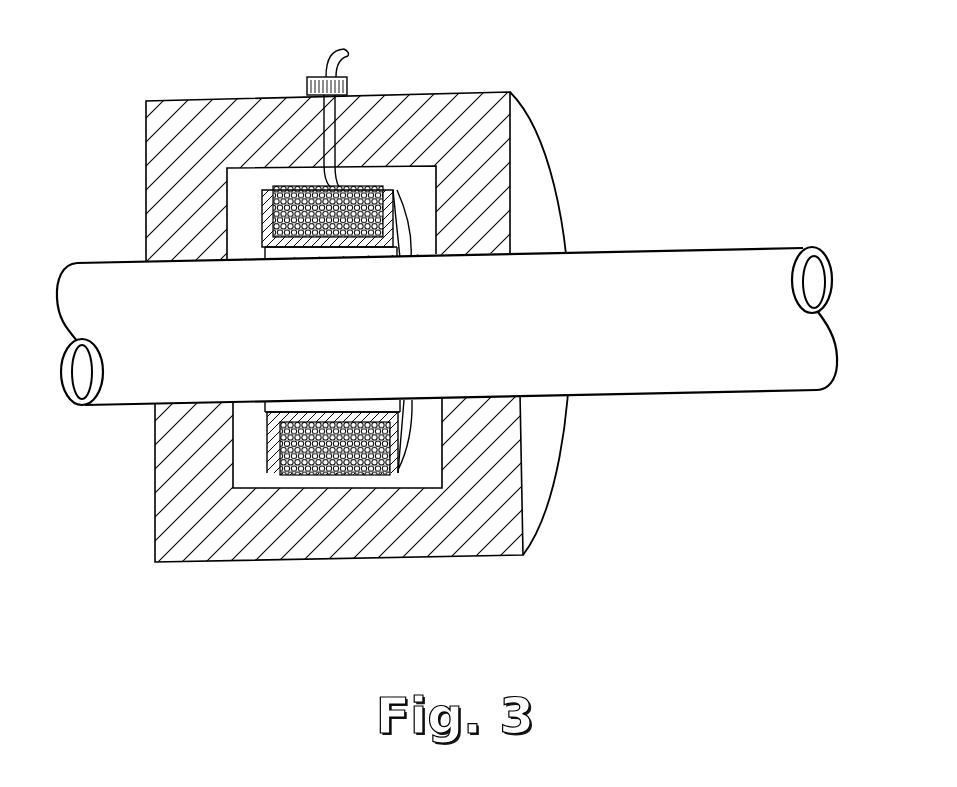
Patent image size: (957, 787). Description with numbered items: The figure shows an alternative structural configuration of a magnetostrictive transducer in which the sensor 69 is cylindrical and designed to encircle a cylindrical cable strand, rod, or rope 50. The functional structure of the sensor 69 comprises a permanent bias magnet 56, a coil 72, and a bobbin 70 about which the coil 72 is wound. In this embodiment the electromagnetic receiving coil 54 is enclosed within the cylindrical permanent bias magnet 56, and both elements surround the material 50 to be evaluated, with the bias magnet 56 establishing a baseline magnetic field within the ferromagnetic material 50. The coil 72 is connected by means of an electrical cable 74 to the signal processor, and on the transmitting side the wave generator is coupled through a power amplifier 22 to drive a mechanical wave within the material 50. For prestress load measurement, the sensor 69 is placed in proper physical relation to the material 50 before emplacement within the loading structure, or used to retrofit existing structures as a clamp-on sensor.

The power amplifier 22 is at (355, 50).
The ferromagnetic material 50 is at (604, 339).
The receiving coil 54 is at (364, 250).
The permanent bias magnet 56 is at (146, 175).
The magnetostrictive sensor 69 is at (556, 160).
The bobbin 70 is at (306, 412).
The coil 72 is at (357, 479).
The electrical cable 74 is at (330, 55).